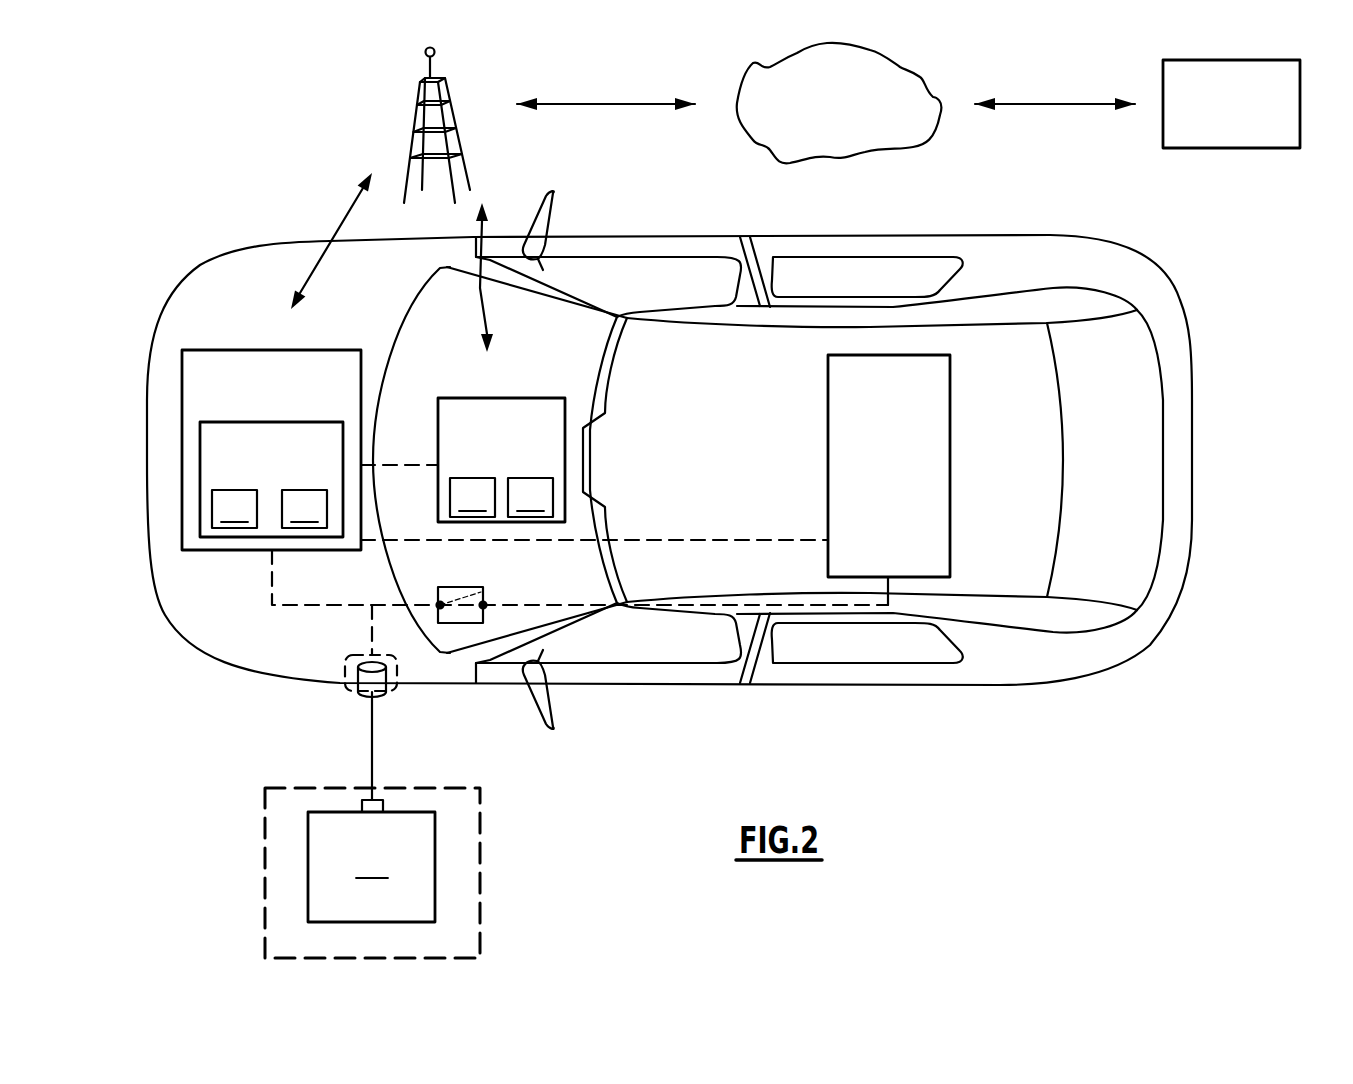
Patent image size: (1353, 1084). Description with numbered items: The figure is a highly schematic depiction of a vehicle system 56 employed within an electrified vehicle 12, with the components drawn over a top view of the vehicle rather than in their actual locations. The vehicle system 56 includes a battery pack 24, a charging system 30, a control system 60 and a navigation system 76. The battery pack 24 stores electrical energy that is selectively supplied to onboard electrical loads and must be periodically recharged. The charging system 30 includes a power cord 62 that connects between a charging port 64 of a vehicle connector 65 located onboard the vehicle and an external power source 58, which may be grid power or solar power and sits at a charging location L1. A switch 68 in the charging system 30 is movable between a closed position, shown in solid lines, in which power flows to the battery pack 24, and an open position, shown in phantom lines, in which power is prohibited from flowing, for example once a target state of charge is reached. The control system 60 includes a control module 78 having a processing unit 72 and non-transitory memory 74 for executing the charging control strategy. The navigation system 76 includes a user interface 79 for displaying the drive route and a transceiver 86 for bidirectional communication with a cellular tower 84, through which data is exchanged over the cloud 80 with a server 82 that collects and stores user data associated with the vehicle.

The electrified vehicle 12 is at (1133, 231).
The battery pack 24 is at (828, 494).
The charging system 30 is at (364, 679).
The vehicle system 56 is at (243, 584).
The external power source 58 is at (371, 861).
The control system 60 is at (262, 450).
The power cord 62 is at (373, 751).
The charging port 64 is at (347, 652).
The vehicle connector 65 is at (384, 660).
The switch 68 is at (483, 598).
The processing unit 72 is at (234, 509).
The non-transitory memory 74 is at (343, 503).
The navigation system 76 is at (477, 459).
The control module 78 is at (311, 479).
The user interface 79 is at (530, 497).
The cloud 80 is at (912, 148).
The server 82 is at (1252, 148).
The cellular tower 84 is at (446, 88).
The transceiver 86 is at (472, 497).
The charging location L1 is at (400, 873).